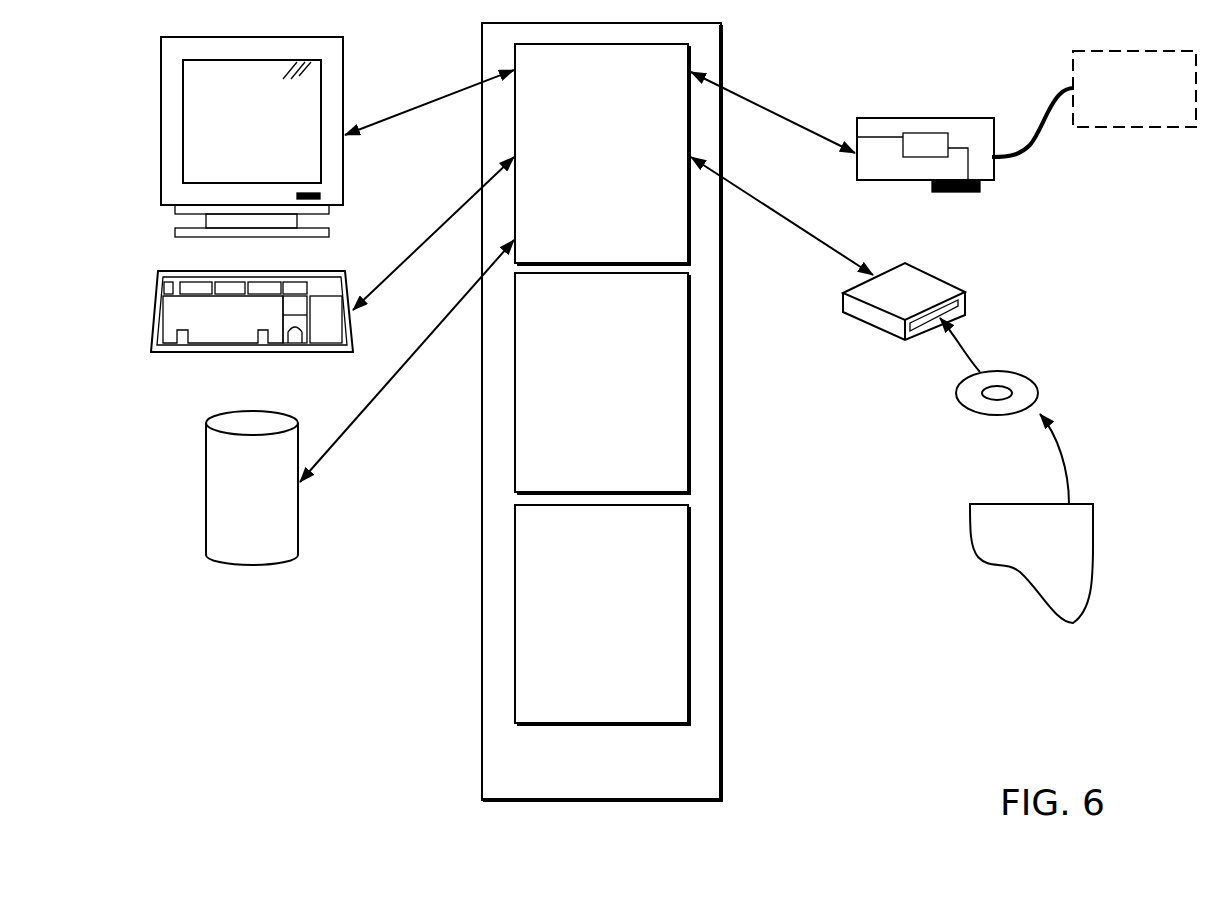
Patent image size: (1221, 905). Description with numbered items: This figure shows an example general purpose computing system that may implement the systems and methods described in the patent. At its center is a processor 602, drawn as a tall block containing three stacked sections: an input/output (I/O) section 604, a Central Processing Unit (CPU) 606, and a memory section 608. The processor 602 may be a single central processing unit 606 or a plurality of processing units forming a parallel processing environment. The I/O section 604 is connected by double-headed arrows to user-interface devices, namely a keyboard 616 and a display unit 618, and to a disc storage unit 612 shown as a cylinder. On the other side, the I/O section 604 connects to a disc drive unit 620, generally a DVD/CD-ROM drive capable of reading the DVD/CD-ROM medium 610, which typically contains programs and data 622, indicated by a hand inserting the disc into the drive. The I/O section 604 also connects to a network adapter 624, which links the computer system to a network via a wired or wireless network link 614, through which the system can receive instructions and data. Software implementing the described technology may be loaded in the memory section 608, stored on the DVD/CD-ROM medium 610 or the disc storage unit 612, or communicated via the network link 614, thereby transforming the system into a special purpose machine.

The processor 602 is at (602, 412).
The input/output (I/O) section 604 is at (583, 176).
The central processing unit (CPU) 606 is at (583, 406).
The memory section 608 is at (583, 638).
The DVD/CD-ROM medium 610 is at (1036, 380).
The disc storage unit 612 is at (206, 488).
The network link 614 is at (1022, 153).
The keyboard 616 is at (152, 310).
The display unit 618 is at (160, 138).
The disc drive unit 620 is at (930, 275).
The programs and data 622 is at (970, 517).
The network adapter 624 is at (897, 118).